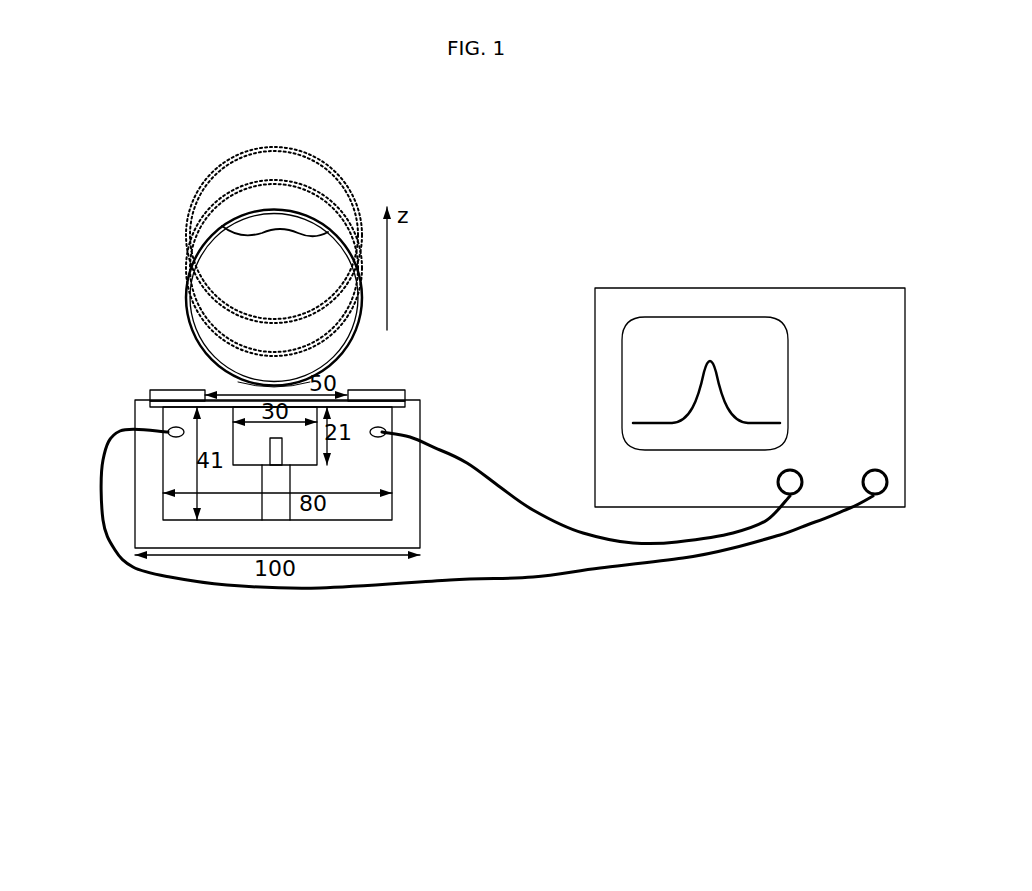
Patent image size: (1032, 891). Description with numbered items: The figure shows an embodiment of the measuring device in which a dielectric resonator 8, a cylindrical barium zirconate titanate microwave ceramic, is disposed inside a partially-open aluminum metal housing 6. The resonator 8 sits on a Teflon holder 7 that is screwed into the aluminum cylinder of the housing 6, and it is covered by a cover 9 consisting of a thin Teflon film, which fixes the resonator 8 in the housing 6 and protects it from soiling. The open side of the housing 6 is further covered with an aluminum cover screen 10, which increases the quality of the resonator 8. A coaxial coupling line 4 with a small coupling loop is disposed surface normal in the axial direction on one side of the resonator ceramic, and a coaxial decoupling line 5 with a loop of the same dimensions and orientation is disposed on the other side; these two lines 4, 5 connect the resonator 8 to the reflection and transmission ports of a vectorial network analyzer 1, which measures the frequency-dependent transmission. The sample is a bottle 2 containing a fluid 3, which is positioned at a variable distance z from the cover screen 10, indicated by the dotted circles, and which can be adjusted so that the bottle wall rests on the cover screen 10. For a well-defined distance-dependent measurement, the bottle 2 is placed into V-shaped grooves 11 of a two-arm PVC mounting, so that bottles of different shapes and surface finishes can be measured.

The vectorial network analyzer 1 is at (775, 285).
The bottle 2 is at (236, 212).
The fluid 3 is at (223, 273).
The coaxial coupling line 4 is at (673, 544).
The coaxial decoupling line 5 is at (533, 587).
The metal housing 6 is at (198, 549).
The Teflon holder 7 is at (292, 504).
The dielectric resonator 8 is at (310, 455).
The cover 9 is at (218, 408).
The cover screen 10 is at (158, 392).
The V-shaped grooves 11 is at (222, 365).